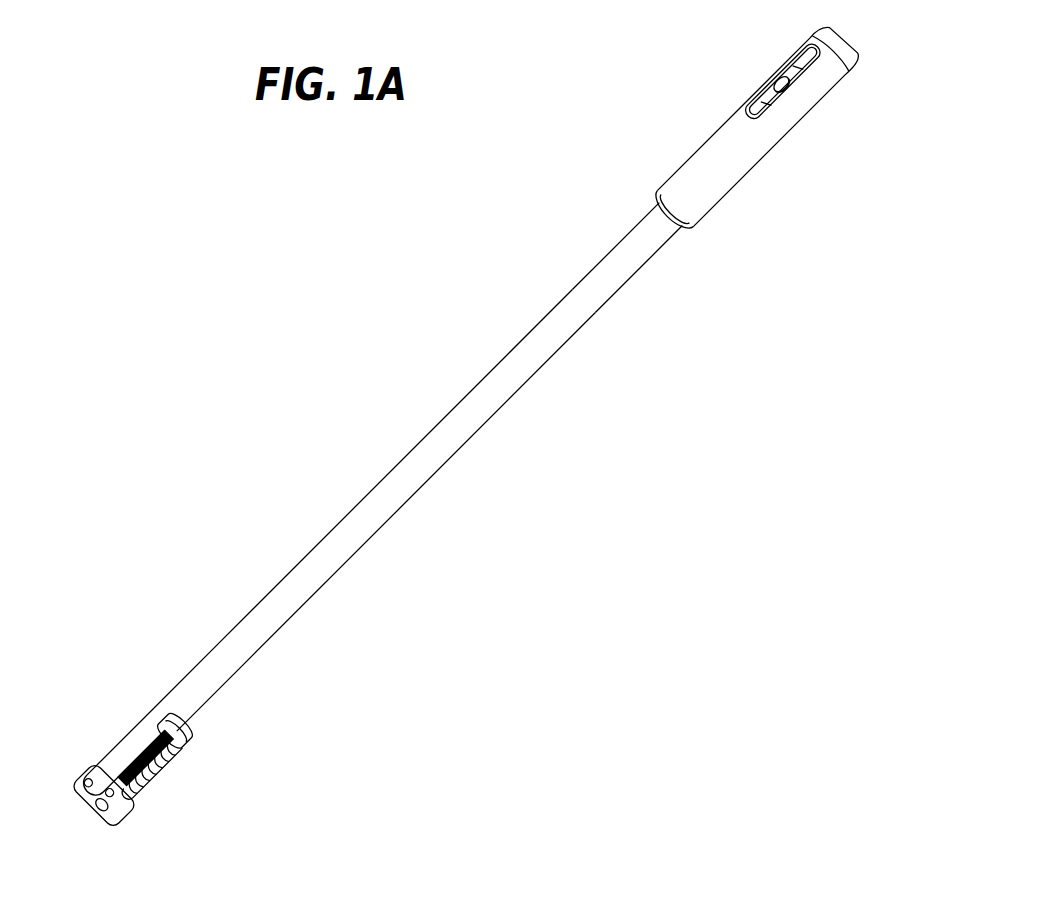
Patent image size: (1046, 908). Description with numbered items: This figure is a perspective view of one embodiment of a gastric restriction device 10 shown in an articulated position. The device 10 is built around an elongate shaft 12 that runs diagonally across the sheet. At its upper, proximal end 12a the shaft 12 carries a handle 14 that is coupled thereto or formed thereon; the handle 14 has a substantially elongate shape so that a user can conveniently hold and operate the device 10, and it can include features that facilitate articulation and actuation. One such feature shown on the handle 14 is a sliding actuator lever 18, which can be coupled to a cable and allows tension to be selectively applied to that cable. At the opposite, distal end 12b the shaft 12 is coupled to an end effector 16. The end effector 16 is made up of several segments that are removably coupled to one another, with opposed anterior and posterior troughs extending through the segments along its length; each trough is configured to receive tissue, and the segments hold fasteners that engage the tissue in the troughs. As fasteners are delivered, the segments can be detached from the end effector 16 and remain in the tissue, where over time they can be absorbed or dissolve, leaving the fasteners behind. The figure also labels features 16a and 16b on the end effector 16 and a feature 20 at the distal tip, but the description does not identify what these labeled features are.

The gastric restriction device 10 is at (297, 375).
The shaft 12 is at (430, 470).
The proximal end 12a is at (686, 266).
The distal end 12b is at (112, 728).
The handle 14 is at (730, 173).
The end effector 16 is at (207, 749).
The lower jaw 16a is at (157, 828).
The upper jaw 16b is at (213, 772).
The sliding actuator lever 18 is at (780, 83).
The distal tip 20 is at (116, 827).